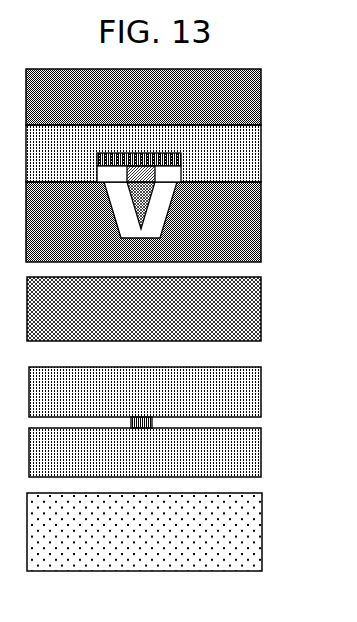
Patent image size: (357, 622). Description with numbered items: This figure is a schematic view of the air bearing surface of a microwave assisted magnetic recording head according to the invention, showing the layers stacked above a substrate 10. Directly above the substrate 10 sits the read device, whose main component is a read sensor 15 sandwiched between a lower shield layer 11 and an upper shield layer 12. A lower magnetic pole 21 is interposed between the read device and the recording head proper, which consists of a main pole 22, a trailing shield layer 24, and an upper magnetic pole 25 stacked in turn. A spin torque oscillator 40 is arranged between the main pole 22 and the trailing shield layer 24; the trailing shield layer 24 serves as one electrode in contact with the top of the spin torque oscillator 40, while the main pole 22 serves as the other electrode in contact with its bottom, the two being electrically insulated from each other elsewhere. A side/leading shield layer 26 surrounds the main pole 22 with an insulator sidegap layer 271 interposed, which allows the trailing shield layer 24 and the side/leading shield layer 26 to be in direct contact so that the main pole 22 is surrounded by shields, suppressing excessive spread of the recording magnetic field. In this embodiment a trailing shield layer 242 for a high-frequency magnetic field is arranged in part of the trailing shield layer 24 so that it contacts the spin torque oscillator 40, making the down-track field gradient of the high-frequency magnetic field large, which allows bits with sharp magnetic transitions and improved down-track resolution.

The substrate 10 is at (256, 530).
The lower shield layer 11 is at (256, 455).
The upper shield layer 12 is at (256, 388).
The read sensor 15 is at (152, 421).
The lower magnetic pole 21 is at (258, 310).
The main pole 22 is at (160, 190).
The trailing shield layer 24 is at (255, 128).
The trailing shield layer for a high-frequency magnetic field 242 is at (157, 158).
The upper magnetic pole 25 is at (252, 98).
The side/leading shield layer 26 is at (253, 238).
The insulator sidegap layer 271 is at (160, 210).
The spin torque oscillator 40 is at (157, 172).